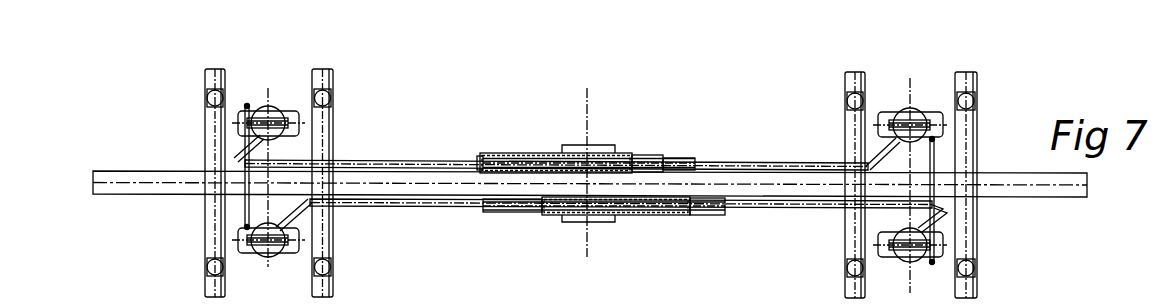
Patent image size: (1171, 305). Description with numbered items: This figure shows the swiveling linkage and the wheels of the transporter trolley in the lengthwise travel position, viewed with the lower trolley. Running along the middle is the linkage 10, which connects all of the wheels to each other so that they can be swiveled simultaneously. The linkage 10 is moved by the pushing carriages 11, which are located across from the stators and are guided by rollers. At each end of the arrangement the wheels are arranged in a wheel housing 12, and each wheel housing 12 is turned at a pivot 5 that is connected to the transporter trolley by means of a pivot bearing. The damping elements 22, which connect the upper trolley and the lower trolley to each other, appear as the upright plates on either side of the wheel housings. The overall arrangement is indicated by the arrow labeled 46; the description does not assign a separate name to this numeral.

The drive shaft assembly 46 is at (115, 145).
The damping elements 22 is at (205, 83).
The pivot 5 is at (270, 110).
The linkage 10 is at (245, 205).
The pushing carriages 11 is at (523, 153).
The wheel housing 12 is at (933, 113).